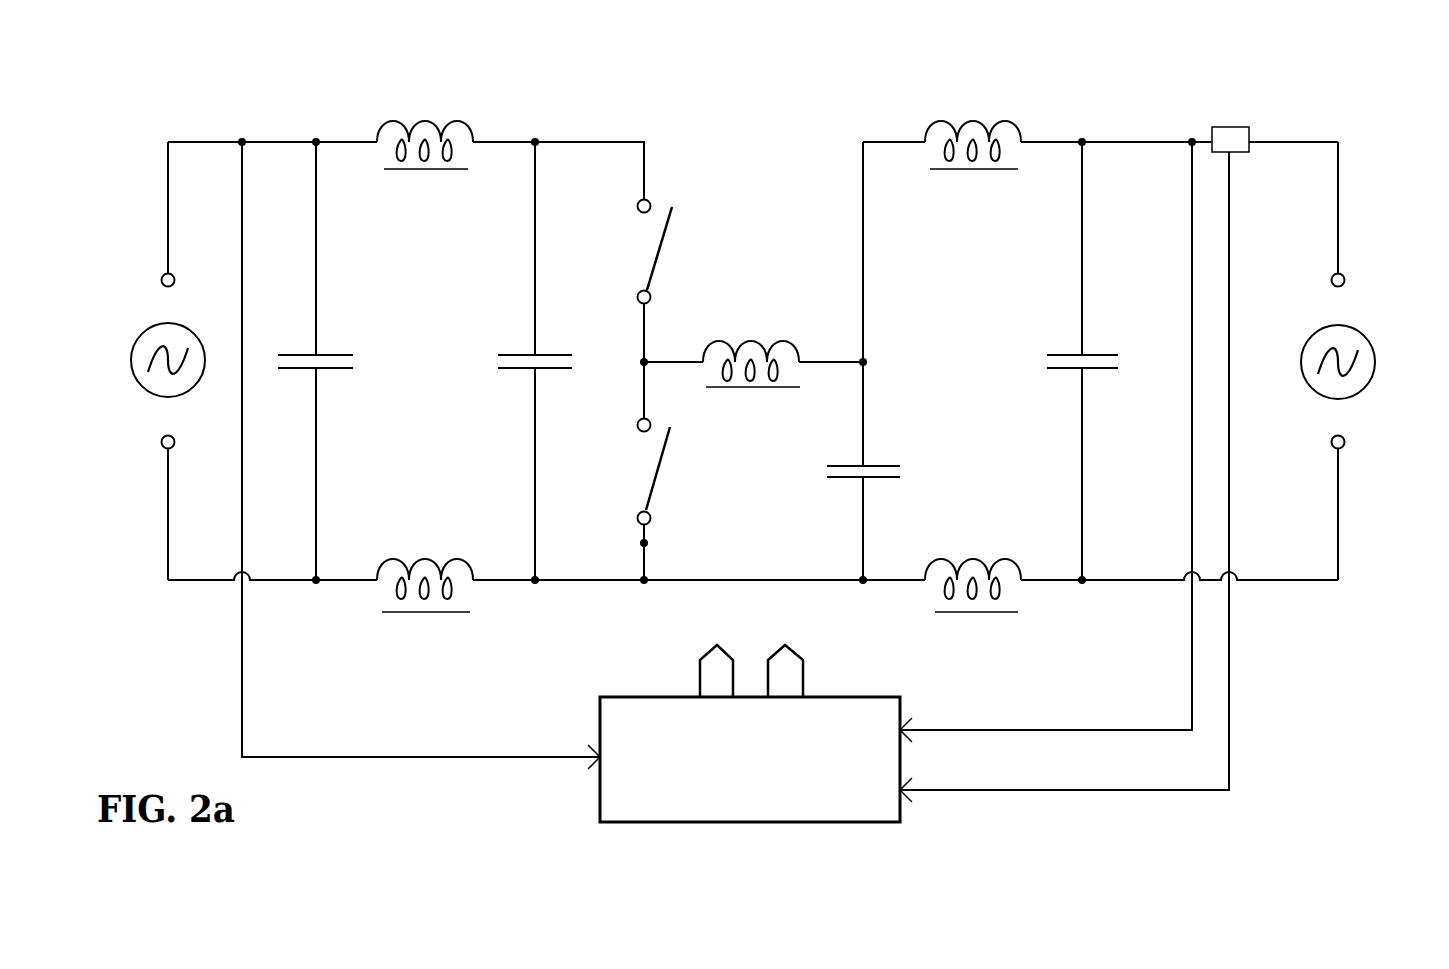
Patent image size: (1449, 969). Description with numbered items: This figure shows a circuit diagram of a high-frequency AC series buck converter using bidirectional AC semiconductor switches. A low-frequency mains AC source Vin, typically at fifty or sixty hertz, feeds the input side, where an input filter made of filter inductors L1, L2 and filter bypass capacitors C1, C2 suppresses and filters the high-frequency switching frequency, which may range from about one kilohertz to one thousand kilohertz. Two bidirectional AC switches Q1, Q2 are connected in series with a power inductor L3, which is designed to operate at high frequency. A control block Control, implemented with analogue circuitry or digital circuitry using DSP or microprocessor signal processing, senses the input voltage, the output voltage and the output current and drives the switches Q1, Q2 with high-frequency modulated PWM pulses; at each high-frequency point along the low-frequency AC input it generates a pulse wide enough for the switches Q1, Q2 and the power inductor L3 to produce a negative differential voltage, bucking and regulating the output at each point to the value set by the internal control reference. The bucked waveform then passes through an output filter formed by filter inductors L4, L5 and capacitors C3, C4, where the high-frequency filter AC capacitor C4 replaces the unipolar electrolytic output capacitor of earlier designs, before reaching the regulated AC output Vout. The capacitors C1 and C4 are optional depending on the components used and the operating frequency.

The filter inductor L1 is at (425, 131).
The filter inductor L2 is at (425, 568).
The power inductor L3 is at (751, 350).
The filter inductor L4 is at (973, 131).
The filter inductor L5 is at (973, 569).
The filter bypass capacitor C1 is at (337, 361).
The filter bypass capacitor C2 is at (513, 361).
The filter bypass capacitor C3 is at (885, 470).
The HF filter AC capacitor C4 is at (1103, 361).
The bidirectional AC switch Q1 is at (634, 309).
The bidirectional AC switch Q2 is at (633, 500).
The AC input voltage source Vin is at (142, 361).
The AC output voltage Vout is at (1361, 361).
The control circuit Control is at (762, 724).